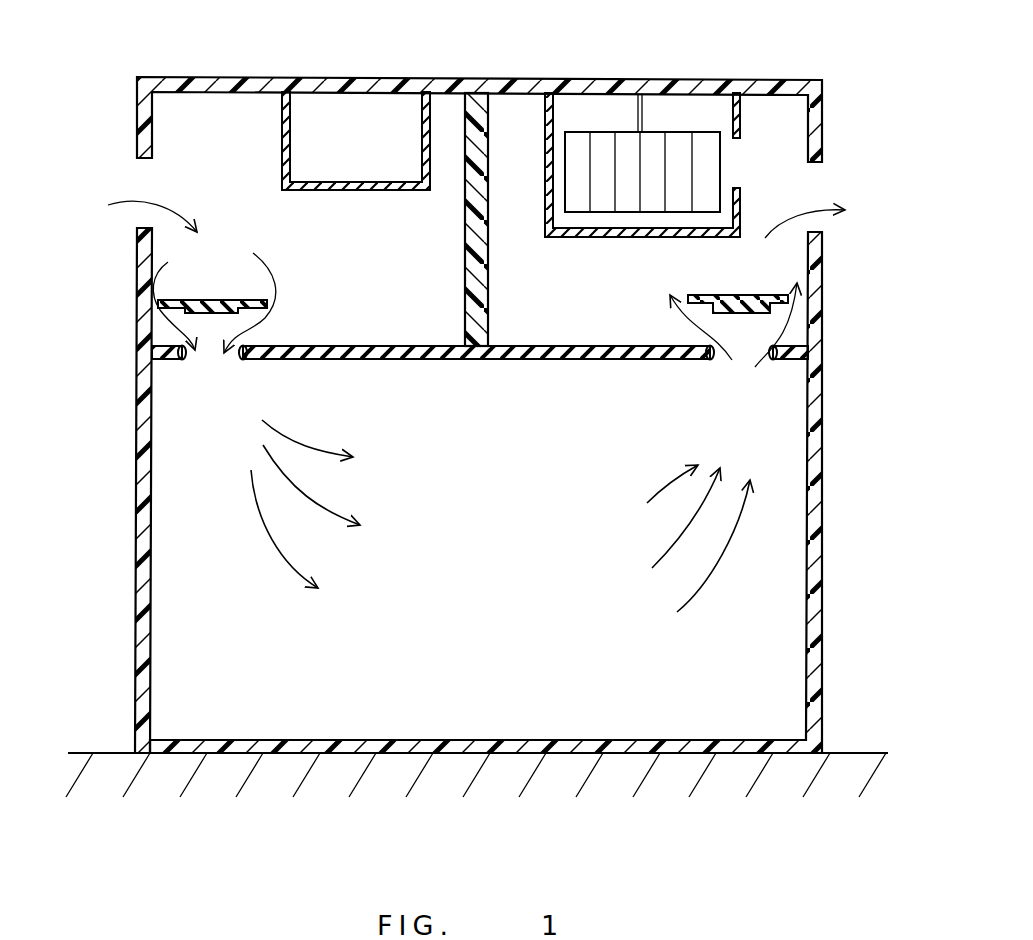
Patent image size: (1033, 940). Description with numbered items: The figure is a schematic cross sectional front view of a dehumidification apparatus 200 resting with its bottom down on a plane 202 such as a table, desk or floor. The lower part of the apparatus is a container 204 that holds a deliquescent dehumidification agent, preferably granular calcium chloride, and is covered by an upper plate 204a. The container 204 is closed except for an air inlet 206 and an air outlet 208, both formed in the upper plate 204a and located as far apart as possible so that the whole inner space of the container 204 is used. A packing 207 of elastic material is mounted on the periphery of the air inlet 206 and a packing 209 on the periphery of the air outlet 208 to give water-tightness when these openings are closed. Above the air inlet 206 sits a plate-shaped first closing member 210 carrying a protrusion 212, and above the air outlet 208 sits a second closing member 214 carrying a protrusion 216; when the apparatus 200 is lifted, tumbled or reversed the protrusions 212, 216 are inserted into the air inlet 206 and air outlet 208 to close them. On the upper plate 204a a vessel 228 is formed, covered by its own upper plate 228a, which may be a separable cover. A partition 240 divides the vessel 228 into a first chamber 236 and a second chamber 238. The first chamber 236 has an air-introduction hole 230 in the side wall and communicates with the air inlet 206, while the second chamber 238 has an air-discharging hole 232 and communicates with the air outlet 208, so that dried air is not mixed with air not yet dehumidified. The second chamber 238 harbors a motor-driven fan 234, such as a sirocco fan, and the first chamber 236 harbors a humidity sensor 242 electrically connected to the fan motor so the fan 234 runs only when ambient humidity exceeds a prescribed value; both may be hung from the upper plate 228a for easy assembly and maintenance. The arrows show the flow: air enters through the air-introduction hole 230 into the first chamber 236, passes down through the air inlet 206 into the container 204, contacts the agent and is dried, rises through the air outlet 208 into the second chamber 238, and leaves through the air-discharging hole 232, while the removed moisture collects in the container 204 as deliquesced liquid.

The dehumidification apparatus 200 is at (837, 312).
The plane 202 is at (845, 753).
The container 204 is at (823, 565).
The upper plate 204a is at (475, 380).
The air inlet 206 is at (210, 355).
The packing 207 is at (237, 357).
The air outlet 208 is at (745, 357).
The packing 209 is at (715, 367).
The first closing member 210 is at (273, 287).
The protrusion 212 is at (262, 335).
The second closing member 214 is at (700, 296).
The protrusion 216 is at (747, 313).
The vessel 228 is at (138, 243).
The upper plate 228a is at (547, 80).
The air-introduction hole 230 is at (148, 180).
The air-discharging hole 232 is at (820, 188).
The fan 234 is at (627, 198).
The first chamber 236 is at (400, 247).
The second chamber 238 is at (603, 318).
The partition 240 is at (483, 288).
The humidity sensor 242 is at (320, 127).